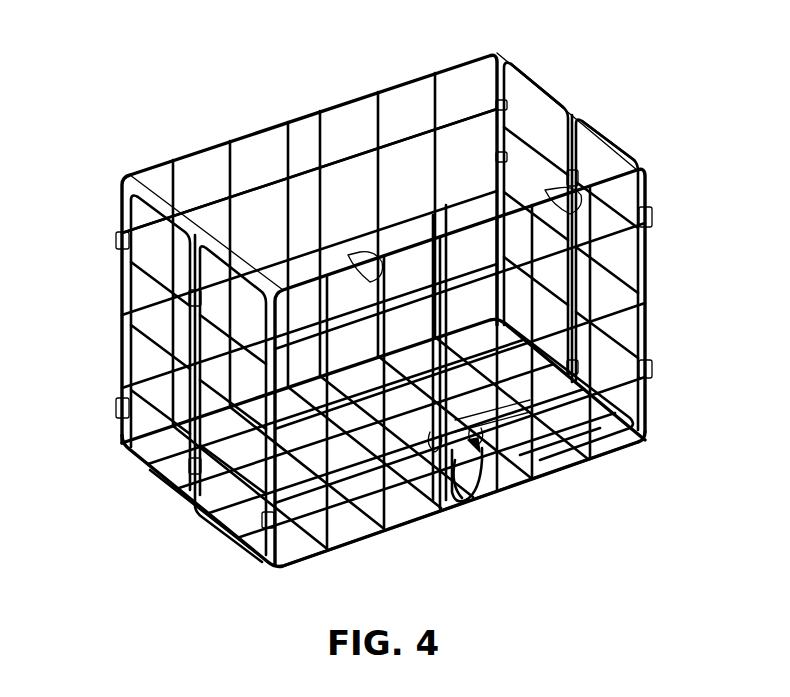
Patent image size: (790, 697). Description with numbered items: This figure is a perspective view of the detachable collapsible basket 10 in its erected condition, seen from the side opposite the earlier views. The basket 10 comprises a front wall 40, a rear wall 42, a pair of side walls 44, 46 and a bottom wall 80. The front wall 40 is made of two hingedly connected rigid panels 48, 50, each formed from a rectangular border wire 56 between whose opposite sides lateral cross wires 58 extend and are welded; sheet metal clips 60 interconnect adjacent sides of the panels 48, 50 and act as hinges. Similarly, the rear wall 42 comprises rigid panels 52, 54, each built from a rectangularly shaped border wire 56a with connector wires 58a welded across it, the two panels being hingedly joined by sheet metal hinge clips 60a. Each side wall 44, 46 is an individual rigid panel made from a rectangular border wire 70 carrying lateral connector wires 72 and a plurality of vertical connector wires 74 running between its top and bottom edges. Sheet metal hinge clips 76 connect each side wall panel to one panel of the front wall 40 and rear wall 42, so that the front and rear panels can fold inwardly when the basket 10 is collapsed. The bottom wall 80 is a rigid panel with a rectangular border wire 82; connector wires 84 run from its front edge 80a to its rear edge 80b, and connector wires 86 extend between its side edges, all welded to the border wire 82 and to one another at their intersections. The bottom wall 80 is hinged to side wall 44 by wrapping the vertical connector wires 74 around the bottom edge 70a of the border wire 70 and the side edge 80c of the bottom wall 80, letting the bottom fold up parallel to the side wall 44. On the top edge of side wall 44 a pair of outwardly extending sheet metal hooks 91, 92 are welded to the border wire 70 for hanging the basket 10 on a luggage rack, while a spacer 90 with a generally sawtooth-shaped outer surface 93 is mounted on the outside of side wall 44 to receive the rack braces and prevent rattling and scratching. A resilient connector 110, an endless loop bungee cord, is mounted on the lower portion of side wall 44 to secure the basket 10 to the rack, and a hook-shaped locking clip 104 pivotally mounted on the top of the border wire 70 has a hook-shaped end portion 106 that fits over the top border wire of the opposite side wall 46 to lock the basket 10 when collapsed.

The detachable collapsible basket 10 is at (161, 53).
The front wall 40 is at (187, 522).
The rear wall 42 is at (591, 109).
The side wall 44 is at (647, 445).
The side wall 46 is at (303, 103).
The rigid panel 48 is at (238, 561).
The rigid panel 50 is at (171, 498).
The rigid panel 52 is at (627, 149).
The rigid panel 54 is at (514, 59).
The border wire 56 is at (141, 471).
The border wire 56a is at (530, 83).
The cross wire 58 is at (125, 261).
The connector wire 58a is at (512, 129).
The sheet metal clip 60 is at (186, 299).
The sheet metal hinge clip 60a is at (652, 175).
The border wire 70 is at (367, 94).
The bottom edge 70a is at (408, 531).
The lateral connector wire 72 is at (277, 184).
The vertical connector wire 74 is at (432, 102).
The sheet metal hinge clip 76 is at (120, 241).
The bottom wall 80 is at (142, 455).
The front edge 80a is at (150, 458).
The rear edge 80b is at (625, 419).
The side edge 80c is at (548, 473).
The border wire 82 is at (603, 455).
The connector wire 84 is at (345, 511).
The connector wire 86 is at (565, 451).
The spacer 90 is at (482, 473).
The sheet metal hook 91 is at (388, 263).
The sheet metal hook 92 is at (562, 201).
The sawtooth-shaped outer surface 93 is at (513, 481).
The hook-shaped locking clip 104 is at (445, 213).
The hook-shaped end portion 106 is at (456, 206).
The resilient connector 110 is at (462, 501).